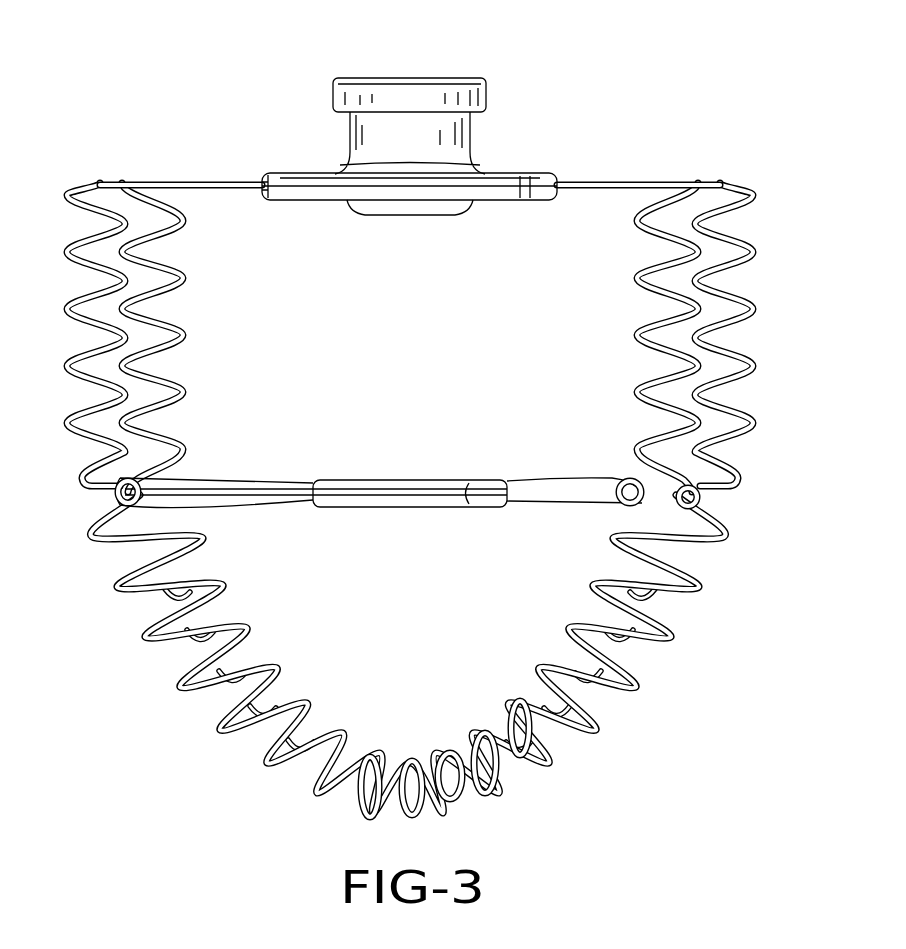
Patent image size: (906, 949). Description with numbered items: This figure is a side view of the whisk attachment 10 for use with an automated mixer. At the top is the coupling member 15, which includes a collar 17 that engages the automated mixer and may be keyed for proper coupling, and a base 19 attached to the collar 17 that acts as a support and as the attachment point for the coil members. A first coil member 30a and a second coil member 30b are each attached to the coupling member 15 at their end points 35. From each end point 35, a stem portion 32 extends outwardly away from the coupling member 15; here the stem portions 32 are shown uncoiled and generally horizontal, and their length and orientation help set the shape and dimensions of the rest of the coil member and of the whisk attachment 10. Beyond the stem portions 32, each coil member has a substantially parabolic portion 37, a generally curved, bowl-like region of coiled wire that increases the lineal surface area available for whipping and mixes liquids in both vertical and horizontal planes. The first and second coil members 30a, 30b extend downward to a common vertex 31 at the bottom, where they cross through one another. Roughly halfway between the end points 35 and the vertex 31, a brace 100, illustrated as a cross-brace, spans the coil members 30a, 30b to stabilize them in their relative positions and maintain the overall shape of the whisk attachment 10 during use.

The whisk attachment 10 is at (108, 102).
The coupling member 15 is at (470, 133).
The collar 17 is at (358, 133).
The base 19 is at (500, 182).
The first coil member 30a is at (105, 520).
The second coil member 30b is at (738, 242).
The vertex 31 is at (428, 820).
The stem portion 32 is at (175, 185).
The end point 35 is at (261, 188).
The substantially parabolic portion 37 is at (203, 740).
The brace 100 is at (400, 481).